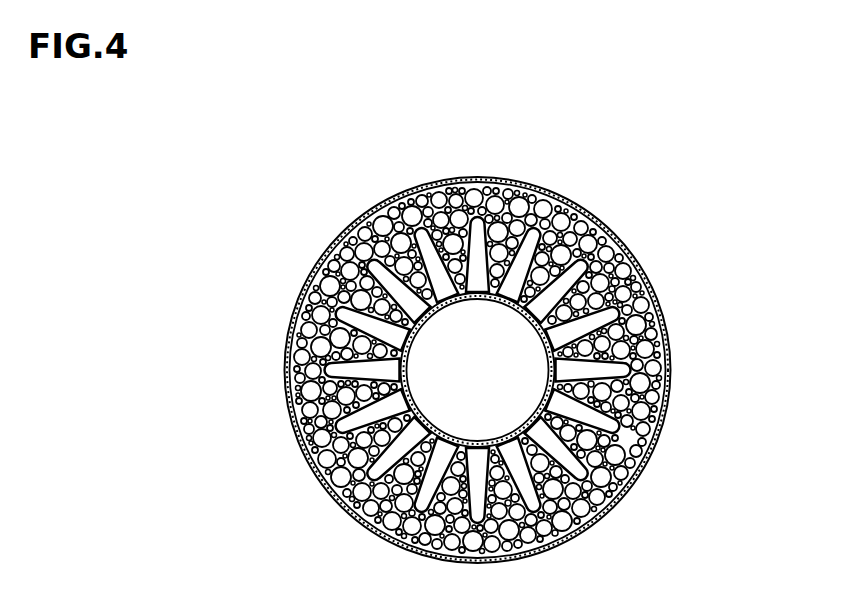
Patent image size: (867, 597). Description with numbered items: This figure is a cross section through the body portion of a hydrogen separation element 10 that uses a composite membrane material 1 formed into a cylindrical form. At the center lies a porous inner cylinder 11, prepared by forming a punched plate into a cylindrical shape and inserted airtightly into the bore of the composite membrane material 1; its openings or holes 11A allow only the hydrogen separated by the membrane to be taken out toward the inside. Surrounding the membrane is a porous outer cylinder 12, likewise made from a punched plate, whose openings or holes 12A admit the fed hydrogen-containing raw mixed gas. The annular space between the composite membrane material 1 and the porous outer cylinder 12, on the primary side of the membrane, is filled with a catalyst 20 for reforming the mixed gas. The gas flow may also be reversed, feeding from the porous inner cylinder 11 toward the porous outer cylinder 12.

The composite membrane material 1 is at (446, 205).
The hydrogen separation element 10 is at (648, 212).
The porous inner cylinder 11 is at (548, 248).
The openings or holes of the porous inner cylinder 11A is at (530, 267).
The porous outer cylinder 12 is at (673, 313).
The openings or holes of the porous outer cylinder 12A is at (657, 293).
The catalyst 20 is at (672, 365).